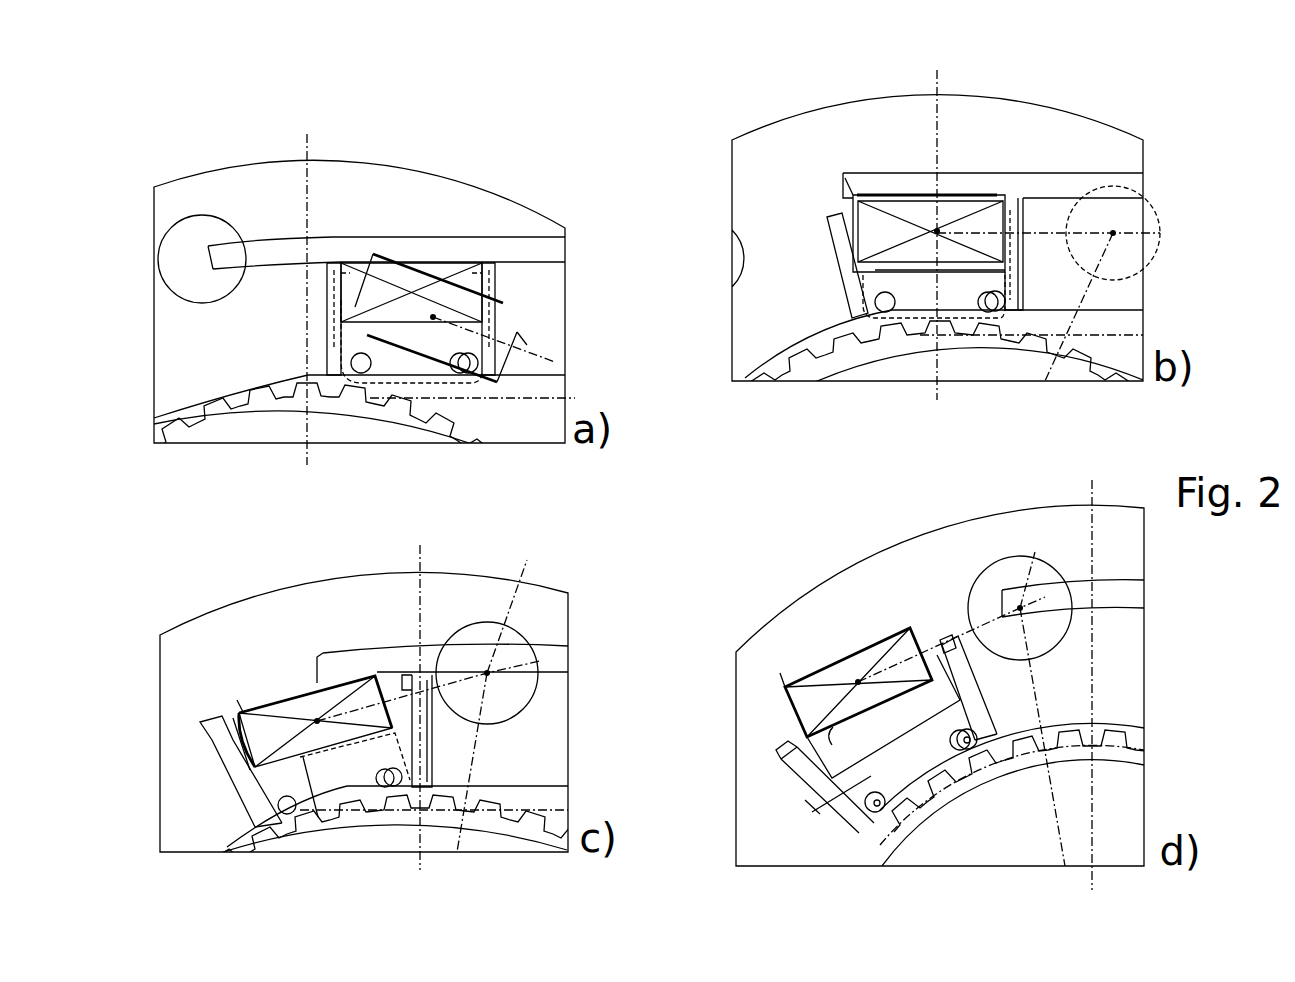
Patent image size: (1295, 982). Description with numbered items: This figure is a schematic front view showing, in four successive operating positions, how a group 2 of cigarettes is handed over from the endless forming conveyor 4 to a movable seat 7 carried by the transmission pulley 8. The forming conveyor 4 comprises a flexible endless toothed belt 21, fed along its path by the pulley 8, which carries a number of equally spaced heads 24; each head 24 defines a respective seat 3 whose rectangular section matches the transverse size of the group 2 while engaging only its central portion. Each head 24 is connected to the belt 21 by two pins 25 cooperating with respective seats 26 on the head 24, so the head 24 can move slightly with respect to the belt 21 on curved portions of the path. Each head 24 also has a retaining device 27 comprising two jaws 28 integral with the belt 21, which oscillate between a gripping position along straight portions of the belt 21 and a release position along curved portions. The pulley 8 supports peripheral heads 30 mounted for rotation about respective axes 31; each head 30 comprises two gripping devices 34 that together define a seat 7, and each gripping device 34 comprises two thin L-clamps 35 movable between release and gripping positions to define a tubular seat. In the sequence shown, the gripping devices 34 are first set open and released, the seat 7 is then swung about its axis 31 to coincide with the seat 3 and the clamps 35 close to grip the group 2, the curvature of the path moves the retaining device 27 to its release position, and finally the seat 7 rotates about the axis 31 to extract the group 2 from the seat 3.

The group of cigarettes 2 is at (433, 269).
The seat 3 is at (360, 259).
The endless forming conveyor 4 is at (174, 439).
The seat 7 is at (505, 323).
The transmission pulley 8 is at (258, 159).
The flexible endless toothed belt 21 is at (553, 388).
The head 24 is at (355, 337).
The pin 25 is at (967, 740).
The seat 26 is at (960, 728).
The retaining device 27 is at (814, 806).
The jaw 28 is at (490, 272).
The peripheral head 30 is at (505, 288).
The axis 31 is at (749, 526).
The gripping device 34 is at (527, 337).
The L-clamp 35 is at (373, 254).